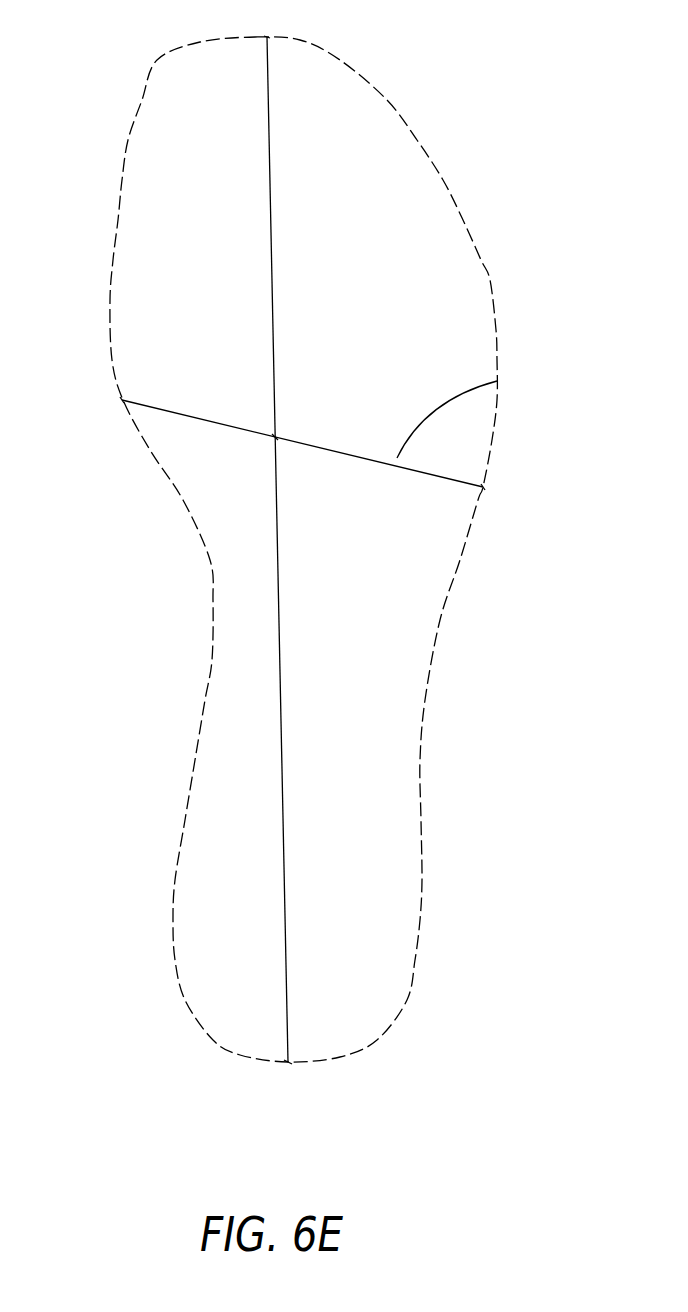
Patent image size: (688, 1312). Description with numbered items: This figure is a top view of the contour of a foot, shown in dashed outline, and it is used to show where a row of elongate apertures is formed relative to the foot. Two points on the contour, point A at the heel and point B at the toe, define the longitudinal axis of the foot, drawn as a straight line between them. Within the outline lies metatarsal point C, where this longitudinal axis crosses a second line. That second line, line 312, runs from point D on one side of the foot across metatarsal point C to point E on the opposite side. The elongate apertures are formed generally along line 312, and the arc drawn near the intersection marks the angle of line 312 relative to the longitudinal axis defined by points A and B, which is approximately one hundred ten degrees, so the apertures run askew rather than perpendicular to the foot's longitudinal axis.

The line 312 is at (497, 381).
The point A is at (287, 1061).
The point B is at (270, 534).
The metatarsal point C is at (273, 439).
The point D is at (119, 399).
The point E is at (487, 487).